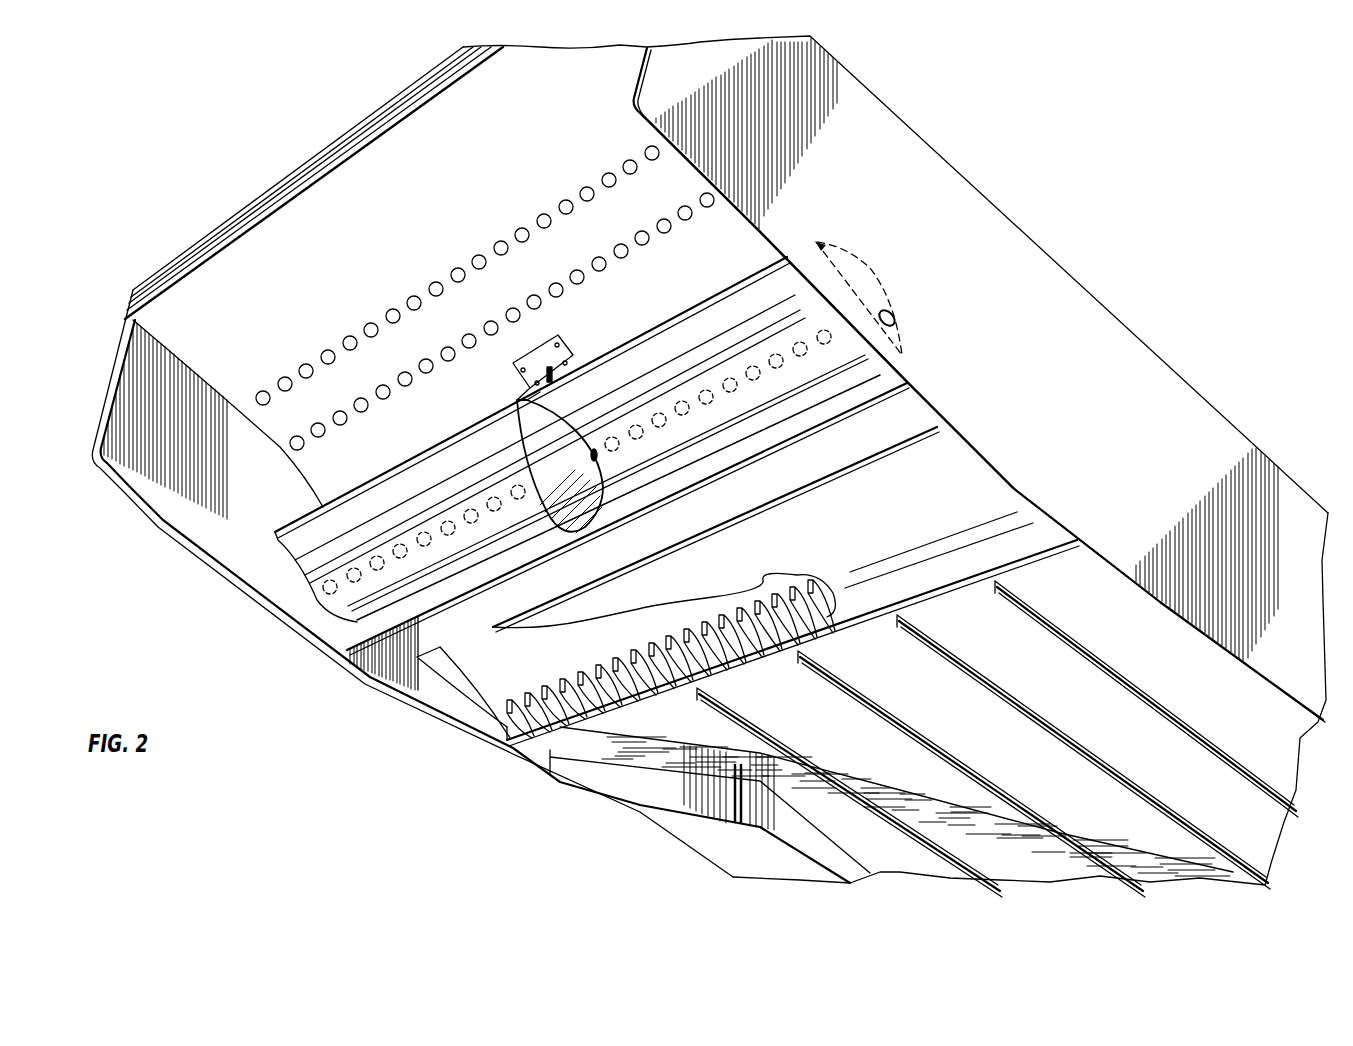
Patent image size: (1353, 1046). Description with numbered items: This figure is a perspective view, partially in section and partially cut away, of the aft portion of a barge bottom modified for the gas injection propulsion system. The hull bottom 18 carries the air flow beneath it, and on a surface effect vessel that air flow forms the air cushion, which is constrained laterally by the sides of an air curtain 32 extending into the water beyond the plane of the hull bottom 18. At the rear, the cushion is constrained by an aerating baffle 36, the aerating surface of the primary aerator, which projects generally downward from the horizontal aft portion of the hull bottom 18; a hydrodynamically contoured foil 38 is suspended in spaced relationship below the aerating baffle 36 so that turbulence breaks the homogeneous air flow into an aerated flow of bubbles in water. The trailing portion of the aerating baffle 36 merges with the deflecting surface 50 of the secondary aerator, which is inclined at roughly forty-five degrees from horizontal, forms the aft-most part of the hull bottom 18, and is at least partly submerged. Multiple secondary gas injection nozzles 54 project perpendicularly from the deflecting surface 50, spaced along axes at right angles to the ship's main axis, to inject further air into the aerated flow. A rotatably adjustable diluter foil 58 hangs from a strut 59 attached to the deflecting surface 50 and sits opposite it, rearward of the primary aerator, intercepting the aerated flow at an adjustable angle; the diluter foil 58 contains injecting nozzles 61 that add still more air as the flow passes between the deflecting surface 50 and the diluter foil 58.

The hull bottom 18 is at (1087, 603).
The air curtain 32 is at (220, 545).
The aerating baffle 36 is at (465, 645).
The hydrodynamically contoured foil 38 is at (955, 492).
The deflecting surface 50 is at (440, 211).
The secondary gas injection nozzles 54 is at (297, 436).
The diluter foil 58 is at (787, 317).
The strut 59 is at (528, 470).
The injecting nozzles 61 is at (340, 590).